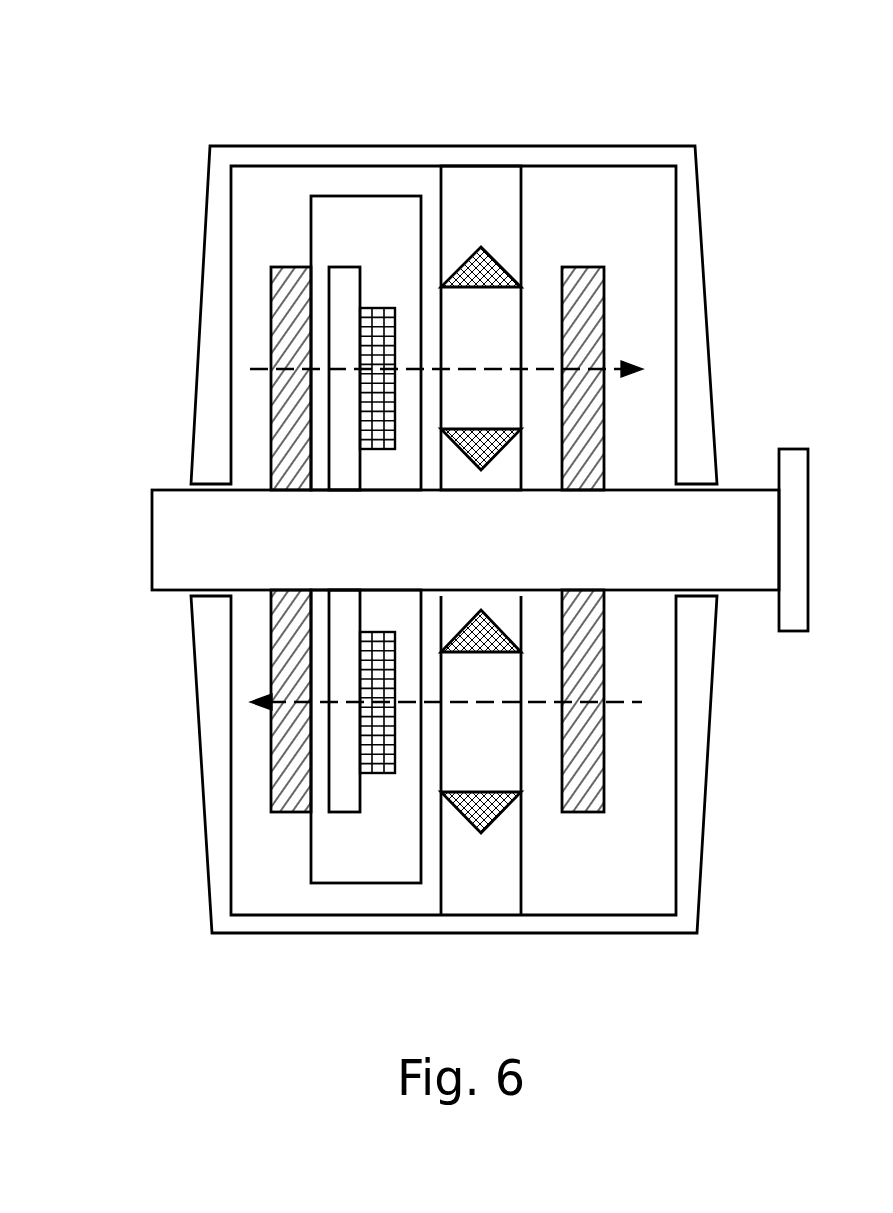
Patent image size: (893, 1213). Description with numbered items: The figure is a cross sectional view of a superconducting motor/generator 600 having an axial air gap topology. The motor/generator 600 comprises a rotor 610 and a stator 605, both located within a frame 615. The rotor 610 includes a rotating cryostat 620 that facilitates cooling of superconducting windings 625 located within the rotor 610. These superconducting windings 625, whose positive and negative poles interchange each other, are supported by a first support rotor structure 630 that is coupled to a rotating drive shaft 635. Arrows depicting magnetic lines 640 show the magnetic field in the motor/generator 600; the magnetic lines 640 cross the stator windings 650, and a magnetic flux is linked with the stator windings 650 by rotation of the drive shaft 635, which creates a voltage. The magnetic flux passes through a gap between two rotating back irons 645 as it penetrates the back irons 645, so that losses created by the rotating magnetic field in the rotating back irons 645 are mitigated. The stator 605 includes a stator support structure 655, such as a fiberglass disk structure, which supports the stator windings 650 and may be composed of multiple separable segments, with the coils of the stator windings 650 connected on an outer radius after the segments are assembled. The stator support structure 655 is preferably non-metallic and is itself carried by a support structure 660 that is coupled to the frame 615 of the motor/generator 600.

The superconducting motor/generator 600 is at (652, 58).
The stator 605 is at (545, 196).
The rotor 610 is at (407, 172).
The frame 615 is at (697, 338).
The rotating cryostat 620 is at (327, 853).
The superconducting windings 625 is at (385, 763).
The first support rotor structure 630 is at (338, 792).
The rotating drive shaft 635 is at (180, 531).
The magnetic lines 640 is at (263, 366).
The rotating back irons 645 is at (280, 449).
The stator windings 650 is at (498, 808).
The stator support structure 655 is at (508, 742).
The support structure 660 is at (513, 893).